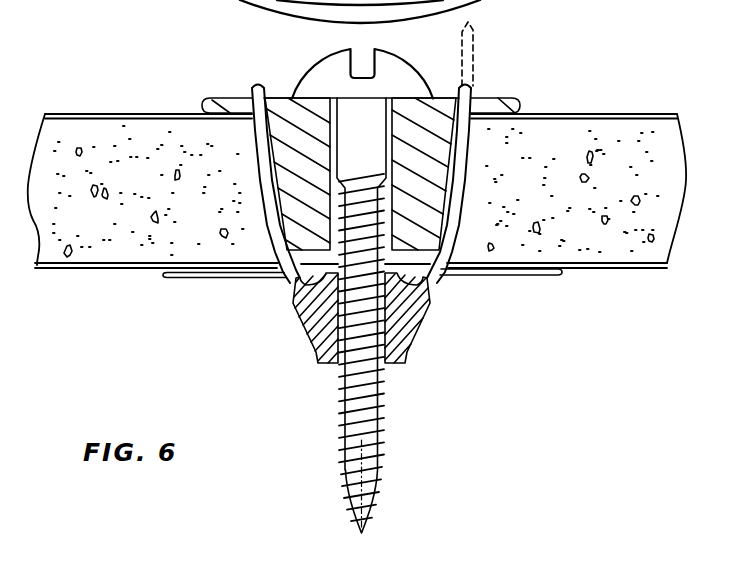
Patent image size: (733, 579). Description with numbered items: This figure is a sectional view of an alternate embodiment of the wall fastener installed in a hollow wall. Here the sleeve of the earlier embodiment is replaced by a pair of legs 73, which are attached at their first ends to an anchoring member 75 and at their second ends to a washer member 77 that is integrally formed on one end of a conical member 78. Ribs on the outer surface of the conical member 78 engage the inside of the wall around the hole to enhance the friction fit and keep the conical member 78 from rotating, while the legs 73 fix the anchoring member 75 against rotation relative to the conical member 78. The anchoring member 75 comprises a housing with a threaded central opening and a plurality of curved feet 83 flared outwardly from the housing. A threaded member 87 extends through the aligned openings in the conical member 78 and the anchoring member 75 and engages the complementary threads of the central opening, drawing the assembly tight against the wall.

The legs 73 is at (258, 155).
The anchoring member 75 is at (415, 323).
The washer member 77 is at (500, 106).
The conical member 78 is at (289, 133).
The curved feet 83 is at (212, 281).
The threaded member 87 is at (367, 415).